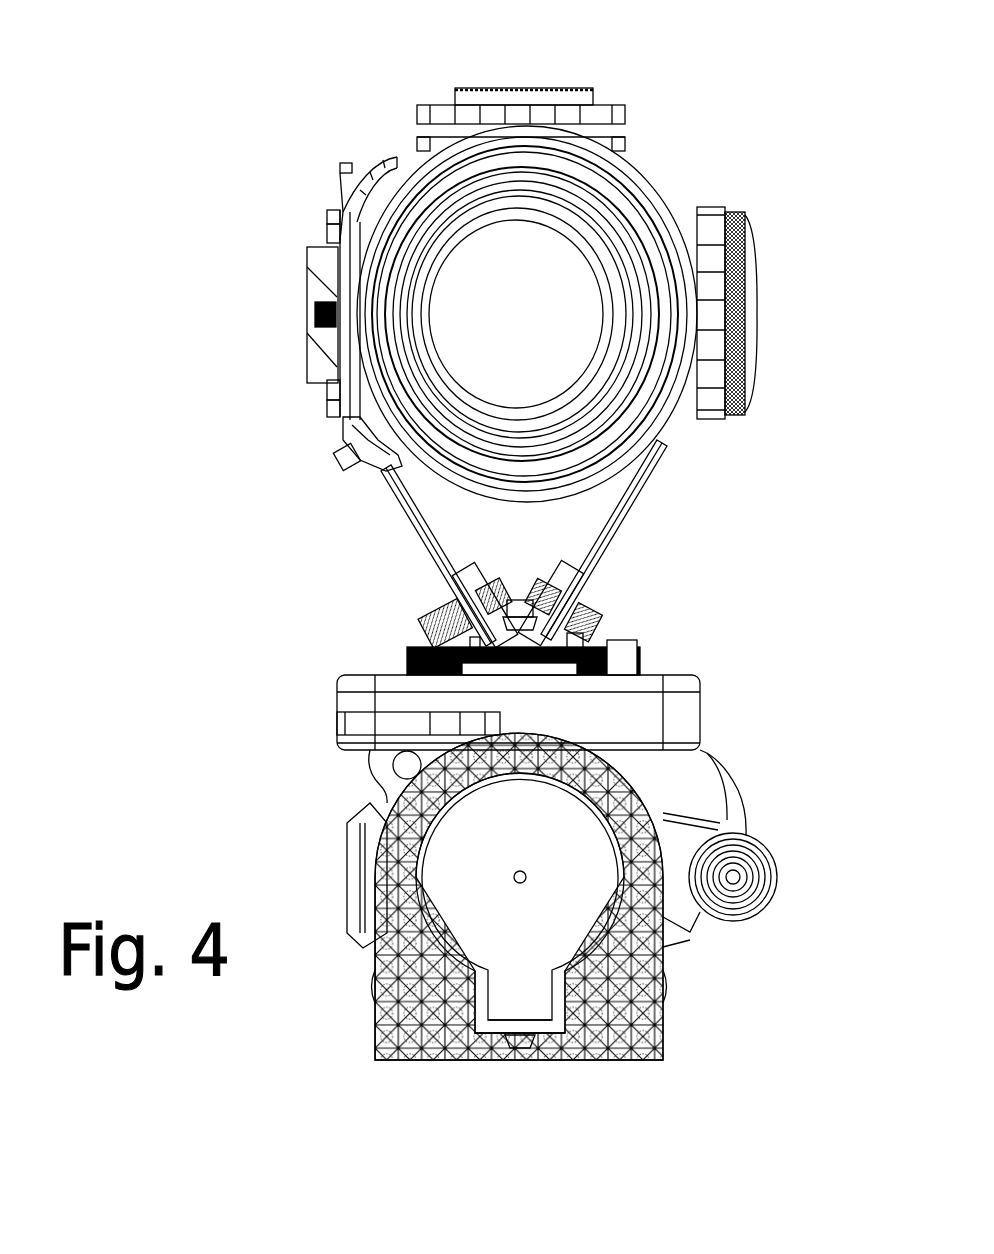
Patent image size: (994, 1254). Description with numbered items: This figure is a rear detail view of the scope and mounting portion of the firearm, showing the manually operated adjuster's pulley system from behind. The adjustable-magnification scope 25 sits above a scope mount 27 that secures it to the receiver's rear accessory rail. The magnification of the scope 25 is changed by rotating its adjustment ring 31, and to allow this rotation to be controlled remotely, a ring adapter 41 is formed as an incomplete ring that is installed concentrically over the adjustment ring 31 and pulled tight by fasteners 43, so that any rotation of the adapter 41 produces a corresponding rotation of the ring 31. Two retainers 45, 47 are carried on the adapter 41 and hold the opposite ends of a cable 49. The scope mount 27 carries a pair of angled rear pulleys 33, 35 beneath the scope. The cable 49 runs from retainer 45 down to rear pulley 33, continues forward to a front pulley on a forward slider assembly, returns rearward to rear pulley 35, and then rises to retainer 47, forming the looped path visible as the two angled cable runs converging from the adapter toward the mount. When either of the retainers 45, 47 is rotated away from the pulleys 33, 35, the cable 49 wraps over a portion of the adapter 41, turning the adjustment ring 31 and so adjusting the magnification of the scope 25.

The adjustable-magnification scope 25 is at (618, 94).
The ring adapter 41 is at (655, 178).
The retainer 47 is at (350, 163).
The fasteners 43 is at (316, 310).
The retainer 45 is at (345, 457).
The adjustment ring 31 is at (637, 408).
The cable 49 is at (413, 512).
The rear pulley 33 is at (452, 598).
The rear pulley 35 is at (597, 593).
The scope mount 27 is at (640, 640).